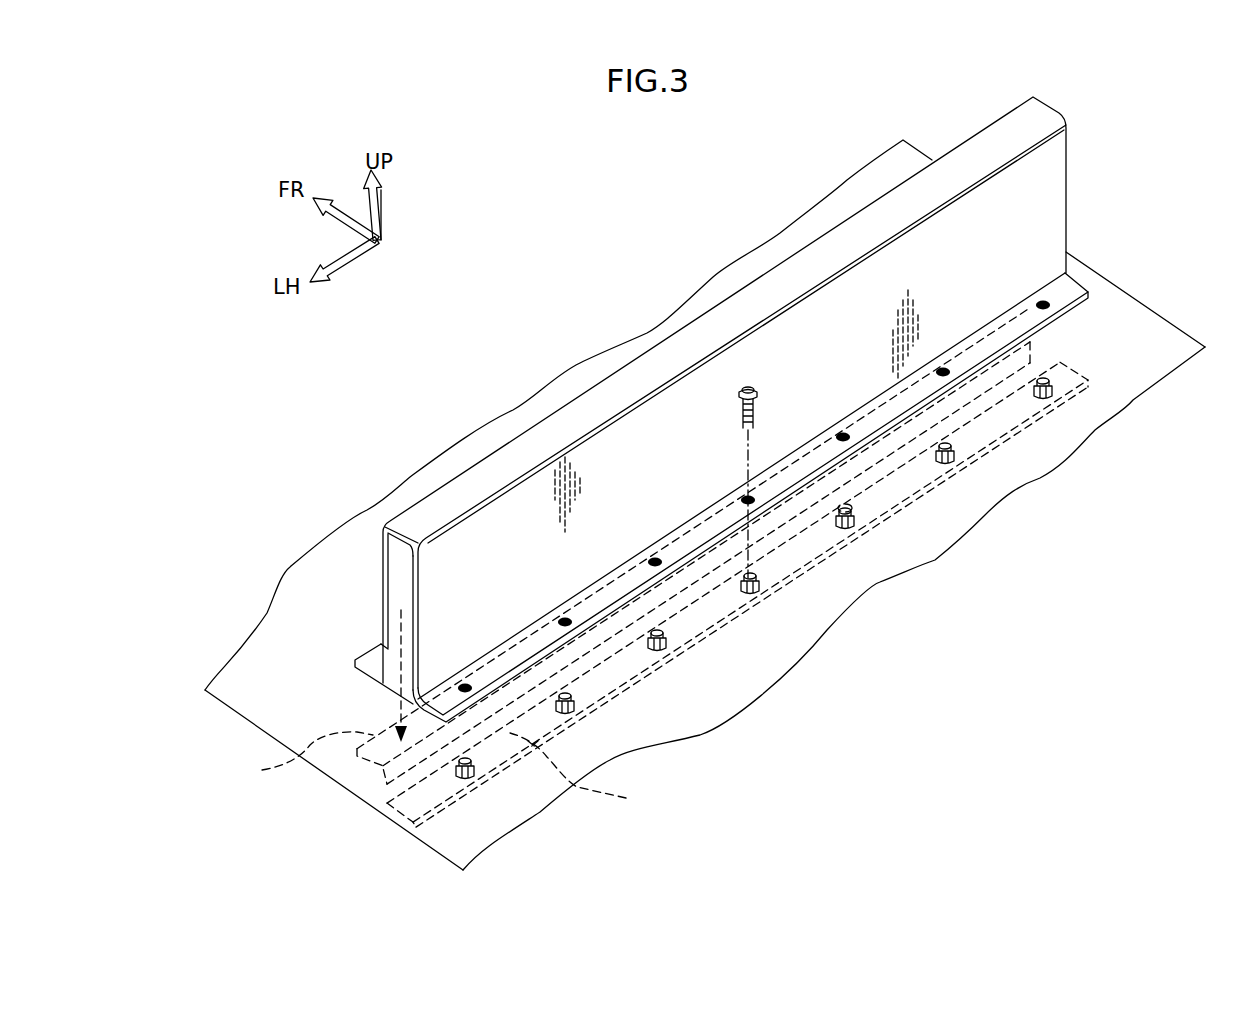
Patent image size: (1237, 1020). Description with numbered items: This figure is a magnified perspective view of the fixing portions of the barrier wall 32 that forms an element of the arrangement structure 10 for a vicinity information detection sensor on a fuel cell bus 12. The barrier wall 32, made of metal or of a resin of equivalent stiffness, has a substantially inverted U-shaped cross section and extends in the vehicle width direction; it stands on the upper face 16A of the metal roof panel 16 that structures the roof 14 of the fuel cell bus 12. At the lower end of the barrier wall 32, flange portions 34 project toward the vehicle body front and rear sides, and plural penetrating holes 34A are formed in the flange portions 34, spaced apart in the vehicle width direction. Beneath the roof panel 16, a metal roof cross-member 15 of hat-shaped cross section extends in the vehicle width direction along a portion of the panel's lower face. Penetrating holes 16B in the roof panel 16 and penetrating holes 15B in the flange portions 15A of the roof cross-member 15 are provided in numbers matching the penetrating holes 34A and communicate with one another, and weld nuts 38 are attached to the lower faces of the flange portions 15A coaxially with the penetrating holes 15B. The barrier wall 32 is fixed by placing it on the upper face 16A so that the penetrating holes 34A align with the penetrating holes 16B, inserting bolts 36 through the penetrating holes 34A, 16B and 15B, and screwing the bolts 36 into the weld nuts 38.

The arrangement structure 10 is at (362, 608).
The fuel cell bus 12 is at (843, 163).
The roof 14 is at (927, 143).
The roof cross-member 15 is at (650, 586).
The flange portions 15A is at (443, 772).
The penetrating holes 15B is at (858, 506).
The roof panel 16 is at (709, 539).
The upper face 16A is at (1125, 327).
The penetrating holes 16B is at (940, 561).
The barrier wall 32 is at (690, 417).
The flange portions 34 is at (373, 657).
The penetrating holes 34A is at (585, 605).
The bolts 36 is at (762, 388).
The weld nuts 38 is at (738, 606).